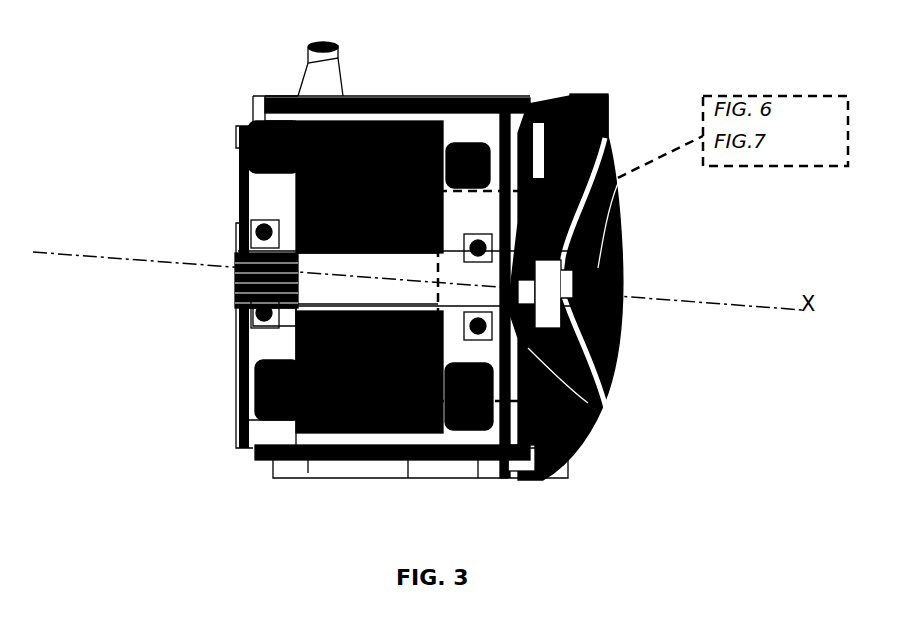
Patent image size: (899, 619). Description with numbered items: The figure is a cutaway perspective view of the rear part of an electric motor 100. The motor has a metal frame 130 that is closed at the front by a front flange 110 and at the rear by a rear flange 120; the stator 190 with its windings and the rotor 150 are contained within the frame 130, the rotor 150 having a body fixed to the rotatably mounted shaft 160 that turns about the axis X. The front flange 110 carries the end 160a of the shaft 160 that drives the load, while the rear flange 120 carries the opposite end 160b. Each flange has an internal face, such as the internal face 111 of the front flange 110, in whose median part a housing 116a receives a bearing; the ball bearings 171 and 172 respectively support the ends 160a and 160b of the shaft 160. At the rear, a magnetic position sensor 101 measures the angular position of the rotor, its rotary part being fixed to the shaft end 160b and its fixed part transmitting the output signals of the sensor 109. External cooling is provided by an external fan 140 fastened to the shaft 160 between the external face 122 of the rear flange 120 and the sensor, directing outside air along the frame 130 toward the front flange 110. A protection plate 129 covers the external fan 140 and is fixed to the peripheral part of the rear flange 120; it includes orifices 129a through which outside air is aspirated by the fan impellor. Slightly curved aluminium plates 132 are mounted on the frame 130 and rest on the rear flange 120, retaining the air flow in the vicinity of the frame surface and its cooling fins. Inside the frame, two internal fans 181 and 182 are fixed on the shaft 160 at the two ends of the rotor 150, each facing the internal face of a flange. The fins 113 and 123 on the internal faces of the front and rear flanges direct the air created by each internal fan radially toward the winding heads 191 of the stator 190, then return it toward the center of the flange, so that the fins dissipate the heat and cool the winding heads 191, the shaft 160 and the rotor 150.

The electric motor 100 is at (140, 66).
The magnetic position sensor 101 is at (572, 324).
The sensor 109 is at (610, 180).
The front flange 110 is at (237, 352).
The internal face 111 is at (240, 158).
The fins 113 is at (250, 332).
The housing 116a is at (250, 335).
The rear flange 120 is at (508, 95).
The external face 122 is at (585, 362).
The fins 123 is at (540, 462).
The protection plate 129 is at (605, 262).
The orifices 129a is at (597, 155).
The frame 130 is at (296, 430).
The metal plates 132 is at (325, 455).
The external fan 140 is at (565, 385).
The rotor 150 is at (320, 250).
The rotatably mounted shaft 160 is at (325, 222).
The end of the shaft driving the load 160a is at (598, 240).
The end of the shaft opposite the load 160b is at (230, 285).
The bearing 171 is at (232, 240).
The bearing 172 is at (588, 392).
The internal fan 181 is at (262, 385).
The internal fan 182 is at (478, 462).
The stator 190 is at (310, 140).
The winding heads 191 is at (265, 140).